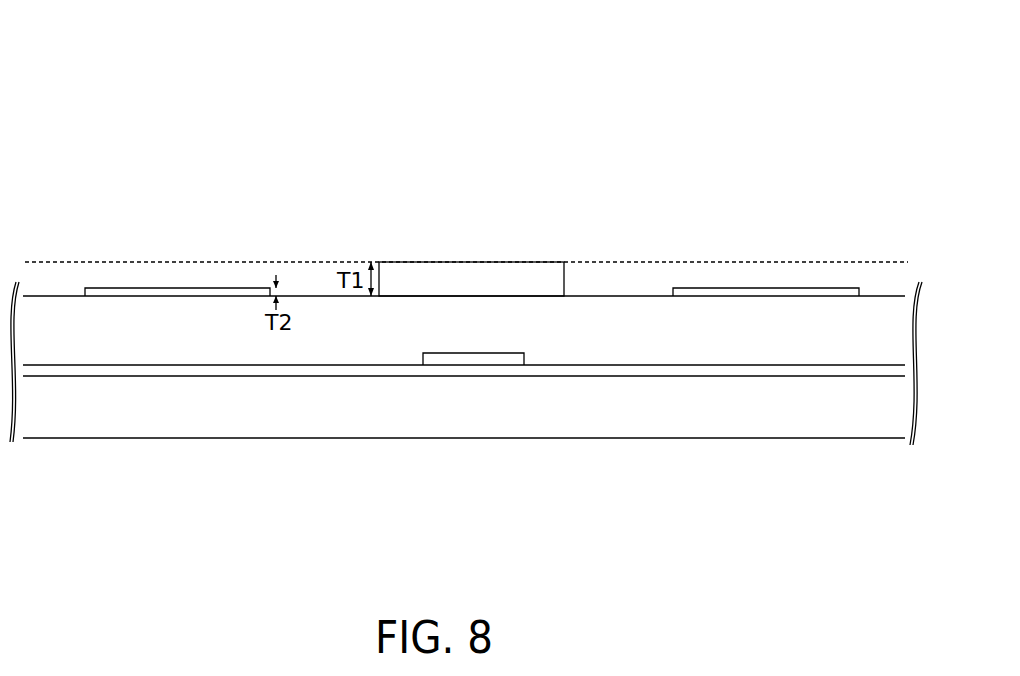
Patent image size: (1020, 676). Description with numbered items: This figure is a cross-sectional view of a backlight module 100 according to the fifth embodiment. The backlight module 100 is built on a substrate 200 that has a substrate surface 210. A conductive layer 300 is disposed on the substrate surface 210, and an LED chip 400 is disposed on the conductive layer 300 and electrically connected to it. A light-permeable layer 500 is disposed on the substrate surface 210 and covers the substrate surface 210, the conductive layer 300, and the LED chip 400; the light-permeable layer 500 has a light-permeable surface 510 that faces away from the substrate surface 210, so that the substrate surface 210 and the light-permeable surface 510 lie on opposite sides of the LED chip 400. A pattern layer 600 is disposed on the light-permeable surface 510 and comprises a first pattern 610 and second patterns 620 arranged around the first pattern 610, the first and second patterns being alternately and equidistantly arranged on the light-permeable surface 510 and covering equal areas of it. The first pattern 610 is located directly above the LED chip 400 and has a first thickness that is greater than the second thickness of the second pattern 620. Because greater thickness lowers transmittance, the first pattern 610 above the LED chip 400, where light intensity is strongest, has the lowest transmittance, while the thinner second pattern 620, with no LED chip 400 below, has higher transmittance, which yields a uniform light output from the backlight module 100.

The backlight module 100 is at (211, 68).
The substrate 200 is at (410, 428).
The substrate surface 210 is at (147, 376).
The conductive layer 300 is at (107, 371).
The LED chip 400 is at (519, 360).
The light-permeable layer 500 is at (660, 333).
The light-permeable surface 510 is at (663, 296).
The pattern layer 600 is at (43, 267).
The first pattern 610 is at (475, 280).
The second pattern 620 is at (200, 288).